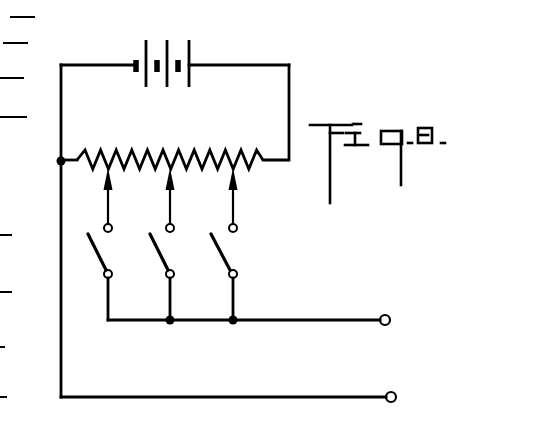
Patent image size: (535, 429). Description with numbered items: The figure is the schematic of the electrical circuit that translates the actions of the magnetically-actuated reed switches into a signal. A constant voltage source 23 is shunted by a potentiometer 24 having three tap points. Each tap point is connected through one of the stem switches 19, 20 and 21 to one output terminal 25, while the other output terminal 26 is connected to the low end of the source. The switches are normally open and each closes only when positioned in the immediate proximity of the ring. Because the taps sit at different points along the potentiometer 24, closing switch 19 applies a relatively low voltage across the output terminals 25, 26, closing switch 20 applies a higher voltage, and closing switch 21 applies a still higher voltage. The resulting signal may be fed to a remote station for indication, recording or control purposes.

The reed switch 19 is at (101, 252).
The reed switch 20 is at (164, 251).
The reed switch 21 is at (226, 251).
The constant voltage source 23 is at (189, 50).
The potentiometer 24 is at (198, 150).
The output terminal 25 is at (390, 312).
The output terminal 26 is at (393, 391).